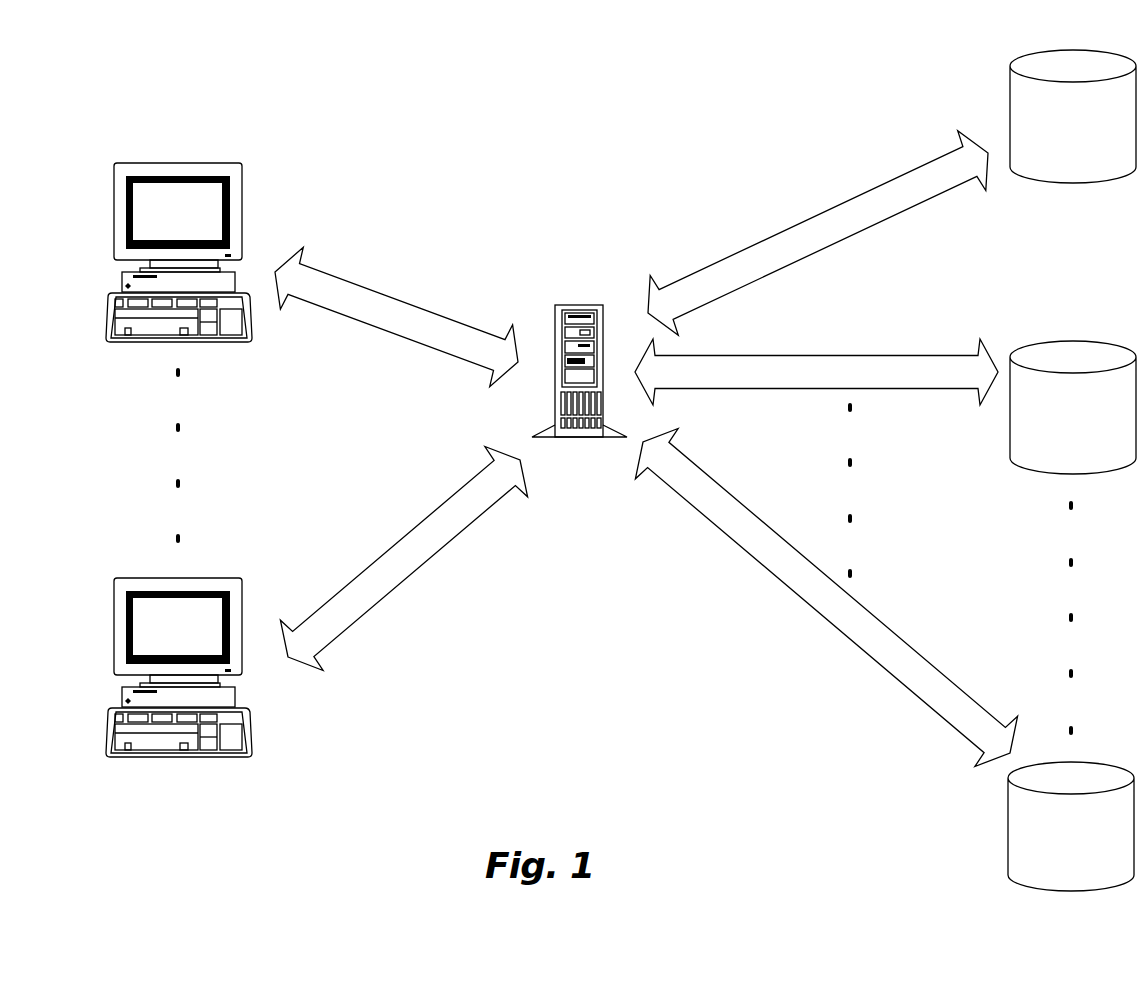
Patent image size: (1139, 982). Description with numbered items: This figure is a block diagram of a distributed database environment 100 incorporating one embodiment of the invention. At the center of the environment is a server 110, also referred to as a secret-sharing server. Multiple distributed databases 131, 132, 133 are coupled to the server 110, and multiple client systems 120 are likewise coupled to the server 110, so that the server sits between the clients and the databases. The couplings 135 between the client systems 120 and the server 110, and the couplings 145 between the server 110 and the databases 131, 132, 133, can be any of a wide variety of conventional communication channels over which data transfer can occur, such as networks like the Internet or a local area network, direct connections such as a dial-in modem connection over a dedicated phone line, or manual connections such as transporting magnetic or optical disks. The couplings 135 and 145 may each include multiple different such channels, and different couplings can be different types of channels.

The distributed database environment 100 is at (450, 118).
The server 110 is at (570, 305).
The client systems 120 is at (243, 188).
The distributed database 131 is at (1057, 158).
The distributed database 132 is at (1057, 449).
The distributed database 133 is at (1055, 868).
The couplings 135 is at (460, 358).
The couplings 145 is at (812, 220).